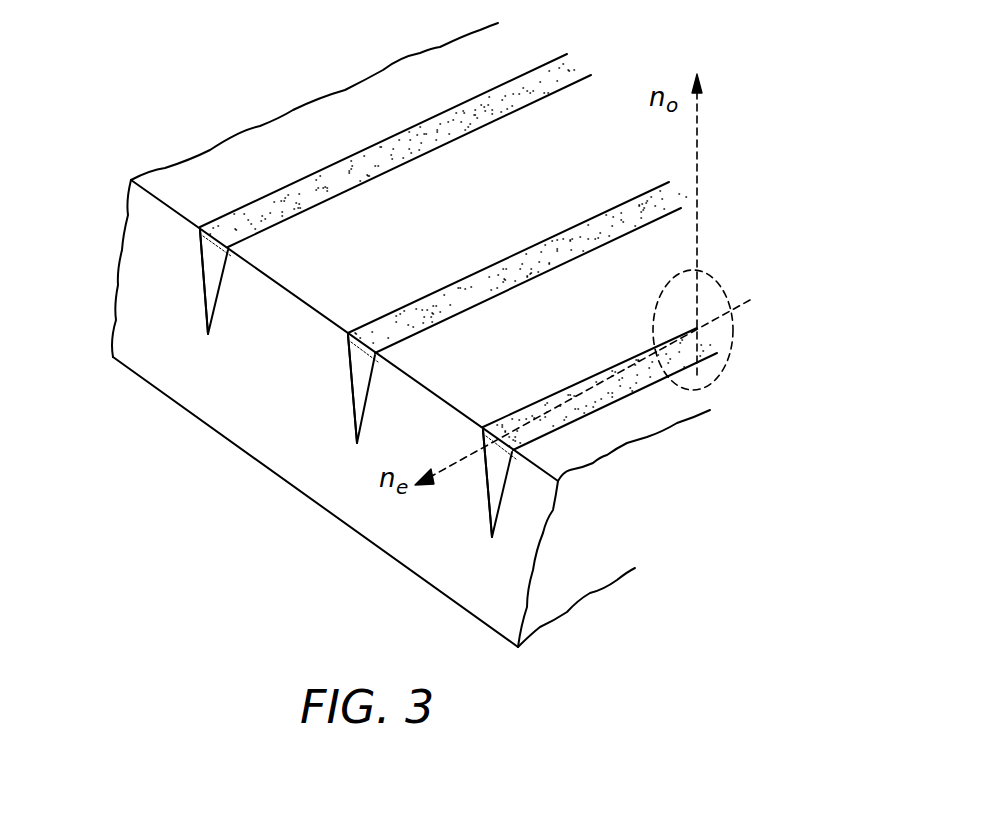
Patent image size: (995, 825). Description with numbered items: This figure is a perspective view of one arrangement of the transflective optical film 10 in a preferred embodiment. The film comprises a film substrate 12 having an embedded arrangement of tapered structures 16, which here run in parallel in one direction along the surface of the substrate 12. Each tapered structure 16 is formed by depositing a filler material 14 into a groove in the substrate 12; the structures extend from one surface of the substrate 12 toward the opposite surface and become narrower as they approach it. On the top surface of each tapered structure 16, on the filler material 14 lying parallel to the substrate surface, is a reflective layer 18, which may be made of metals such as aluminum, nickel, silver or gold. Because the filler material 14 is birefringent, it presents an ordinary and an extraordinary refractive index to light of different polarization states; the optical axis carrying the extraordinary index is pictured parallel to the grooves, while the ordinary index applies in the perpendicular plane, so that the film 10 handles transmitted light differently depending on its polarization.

The transflective optical film 10 is at (302, 123).
The film substrate 12 is at (463, 583).
The filler material 14 is at (360, 390).
The tapered structure 16 is at (200, 303).
The reflective layer 18 is at (198, 242).